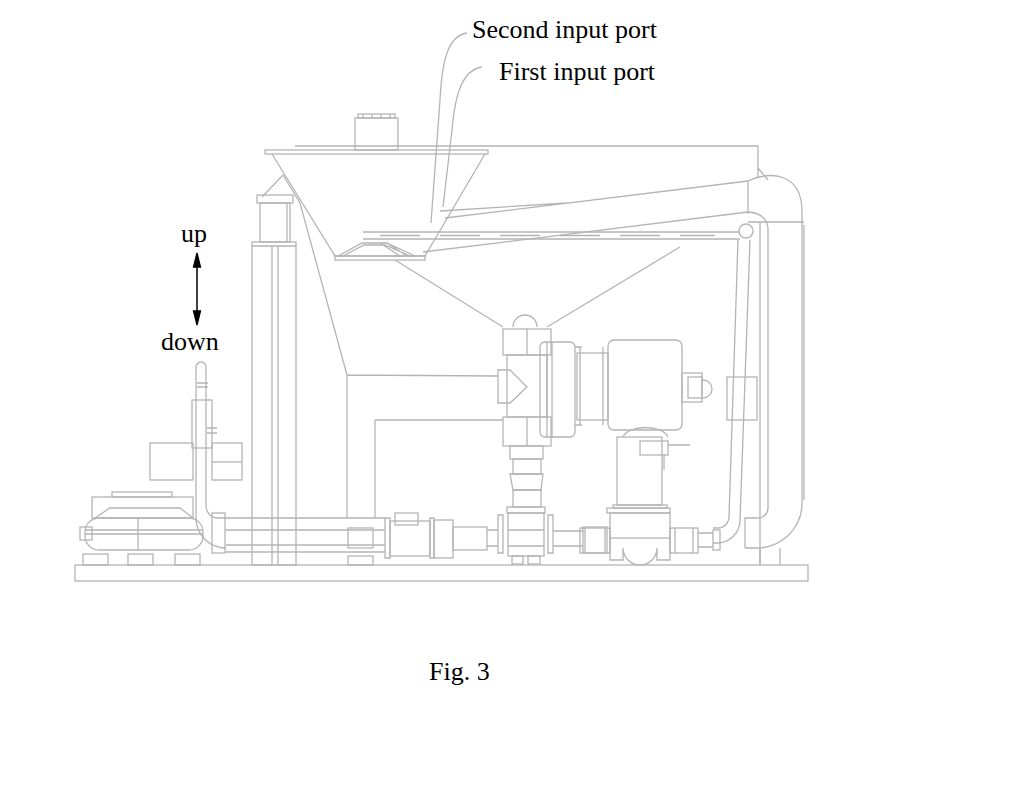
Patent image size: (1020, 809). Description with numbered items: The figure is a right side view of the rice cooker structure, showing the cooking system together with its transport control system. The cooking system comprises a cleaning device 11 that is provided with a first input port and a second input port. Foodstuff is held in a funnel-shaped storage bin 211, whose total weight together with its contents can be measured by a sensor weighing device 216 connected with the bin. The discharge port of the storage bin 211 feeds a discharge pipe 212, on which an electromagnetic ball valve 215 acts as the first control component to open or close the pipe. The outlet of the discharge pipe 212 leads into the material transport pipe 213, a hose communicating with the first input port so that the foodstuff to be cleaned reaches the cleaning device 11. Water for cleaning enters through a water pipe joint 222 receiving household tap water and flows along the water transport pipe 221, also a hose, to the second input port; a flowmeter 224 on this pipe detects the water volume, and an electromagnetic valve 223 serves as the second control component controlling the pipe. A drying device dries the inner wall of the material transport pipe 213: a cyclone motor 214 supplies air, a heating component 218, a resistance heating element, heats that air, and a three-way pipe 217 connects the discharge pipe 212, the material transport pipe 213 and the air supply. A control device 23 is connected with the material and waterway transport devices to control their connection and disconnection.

The cleaning device 11 is at (332, 172).
The storage bin 211 is at (597, 177).
The material transport pipe 213 is at (762, 198).
The water transport pipe 221 is at (743, 237).
The discharge pipe 212 is at (535, 340).
The electromagnetic ball valve 215 is at (538, 388).
The control device 23 is at (700, 462).
The electromagnetic valve 223 is at (635, 528).
The three-way pipe 217 is at (527, 523).
The flowmeter 224 is at (408, 523).
The heating component 218 is at (220, 533).
The cyclone motor 214 is at (115, 530).
The water pipe joint 222 is at (167, 462).
The sensor weighing device 216 is at (272, 220).